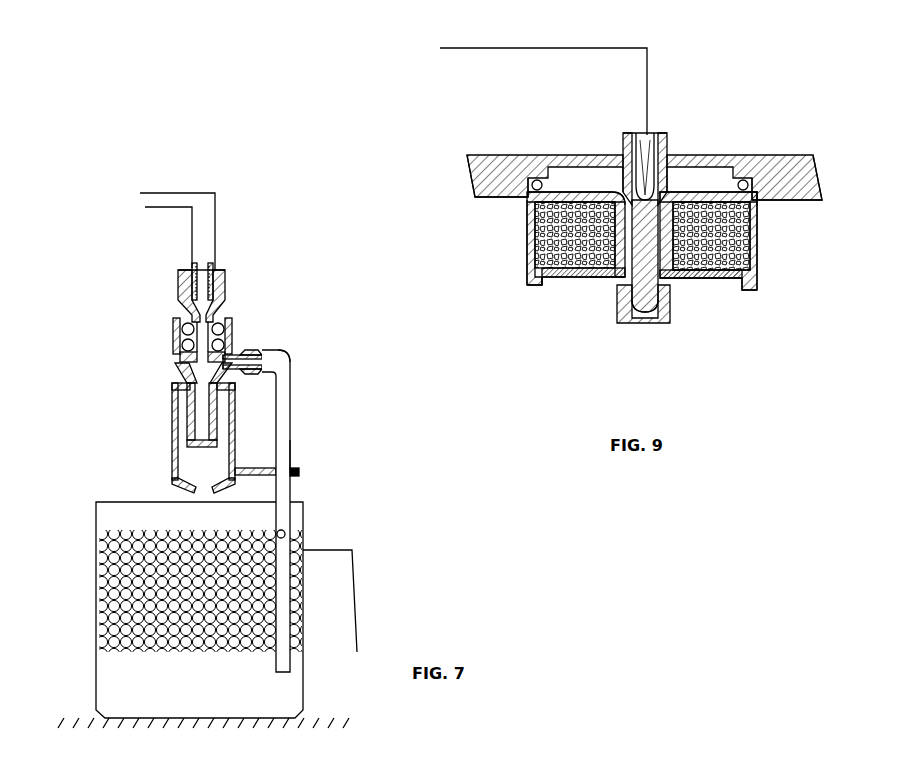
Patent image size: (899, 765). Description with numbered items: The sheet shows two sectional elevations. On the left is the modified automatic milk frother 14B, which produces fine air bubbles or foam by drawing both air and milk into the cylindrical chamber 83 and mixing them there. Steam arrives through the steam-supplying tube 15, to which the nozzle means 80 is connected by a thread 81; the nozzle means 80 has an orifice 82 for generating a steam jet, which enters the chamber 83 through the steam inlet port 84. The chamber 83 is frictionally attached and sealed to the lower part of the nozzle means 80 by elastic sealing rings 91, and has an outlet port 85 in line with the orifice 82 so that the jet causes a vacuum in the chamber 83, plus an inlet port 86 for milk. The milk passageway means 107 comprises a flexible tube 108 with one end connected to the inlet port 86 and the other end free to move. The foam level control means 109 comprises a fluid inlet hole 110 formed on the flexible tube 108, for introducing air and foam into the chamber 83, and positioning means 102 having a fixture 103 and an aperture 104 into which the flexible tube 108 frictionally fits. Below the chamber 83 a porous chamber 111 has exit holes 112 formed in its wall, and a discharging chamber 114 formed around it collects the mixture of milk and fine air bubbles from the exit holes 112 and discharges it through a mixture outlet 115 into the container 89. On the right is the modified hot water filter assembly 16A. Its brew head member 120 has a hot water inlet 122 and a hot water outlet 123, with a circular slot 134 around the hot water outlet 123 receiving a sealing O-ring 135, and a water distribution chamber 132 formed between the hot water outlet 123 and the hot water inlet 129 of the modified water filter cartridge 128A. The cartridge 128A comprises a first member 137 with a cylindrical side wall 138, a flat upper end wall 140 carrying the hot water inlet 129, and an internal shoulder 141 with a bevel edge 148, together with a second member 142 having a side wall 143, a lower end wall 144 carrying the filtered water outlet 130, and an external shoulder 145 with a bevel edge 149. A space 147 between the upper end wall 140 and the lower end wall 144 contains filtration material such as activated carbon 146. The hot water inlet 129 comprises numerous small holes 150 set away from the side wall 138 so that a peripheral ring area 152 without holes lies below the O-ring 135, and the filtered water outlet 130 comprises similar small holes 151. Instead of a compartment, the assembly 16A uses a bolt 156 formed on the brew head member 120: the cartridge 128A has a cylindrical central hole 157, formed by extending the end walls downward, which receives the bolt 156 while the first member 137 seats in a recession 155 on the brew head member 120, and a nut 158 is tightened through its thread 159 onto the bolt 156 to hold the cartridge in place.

In FIG. 7, the steam-supplying tube 15 is at (176, 193).
In FIG. 9, the steam-supplying tube 15 is at (535, 48).
In FIG. 7, the modified automatic milk frother 14B is at (241, 178).
In FIG. 7, the nozzle means 80 is at (178, 302).
In FIG. 7, the thread 81 is at (216, 268).
In FIG. 7, the orifice 82 is at (183, 368).
In FIG. 7, the cylindrical chamber 83 is at (181, 332).
In FIG. 7, the steam inlet port 84 is at (224, 374).
In FIG. 7, the outlet port 85 is at (201, 377).
In FIG. 7, the inlet port 86 is at (234, 350).
In FIG. 7, the elastic sealing rings 91 is at (231, 323).
In FIG. 7, the positioning means 102 is at (263, 460).
In FIG. 7, the fixture 103 is at (259, 478).
In FIG. 7, the aperture 104 is at (300, 474).
In FIG. 7, the milk passageway means 107 is at (303, 366).
In FIG. 7, the flexible tube 108 is at (291, 427).
In FIG. 7, the foam level control means 109 is at (302, 453).
In FIG. 7, the fluid inlet hole 110 is at (286, 534).
In FIG. 7, the porous chamber 111 is at (207, 401).
In FIG. 7, the exit holes 112 is at (188, 422).
In FIG. 7, the discharging chamber 114 is at (178, 470).
In FIG. 7, the mixture outlet 115 is at (204, 492).
In FIG. 7, the container 89 is at (200, 615).
In FIG. 9, the modified hot water filter assembly 16A is at (671, 46).
In FIG. 9, the brew head member 120 is at (802, 155).
In FIG. 9, the hot water inlet 122 is at (628, 132).
In FIG. 9, the hot water outlet 123 is at (620, 178).
In FIG. 9, the modified water filter cartridge 128A is at (766, 240).
In FIG. 9, the hot water inlet 129 is at (572, 183).
In FIG. 9, the filtered water outlet 130 is at (707, 290).
In FIG. 9, the water distribution chamber 132 is at (699, 182).
In FIG. 9, the circular slot 134 is at (532, 182).
In FIG. 9, the sealing O-ring 135 is at (533, 153).
In FIG. 9, the first member 137 is at (518, 212).
In FIG. 9, the side wall 138 is at (527, 223).
In FIG. 9, the upper end wall 140 is at (561, 193).
In FIG. 9, the internal shoulder 141 is at (530, 288).
In FIG. 9, the second member 142 is at (577, 282).
In FIG. 9, the side wall 143 is at (603, 278).
In FIG. 9, the lower end wall 144 is at (562, 280).
In FIG. 9, the external shoulder 145 is at (735, 283).
In FIG. 9, the activated carbon 146 is at (756, 258).
In FIG. 9, the space 147 is at (540, 252).
In FIG. 9, the bevel edge 148 is at (540, 285).
In FIG. 9, the bevel edge 149 is at (756, 277).
In FIG. 9, the holes 150 is at (710, 207).
In FIG. 9, the holes 151 is at (732, 280).
In FIG. 9, the peripheral ring area 152 is at (762, 183).
In FIG. 9, the recession 155 is at (758, 204).
In FIG. 9, the bolt 156 is at (650, 170).
In FIG. 9, the cylindrical central hole 157 is at (672, 193).
In FIG. 9, the nut 158 is at (627, 327).
In FIG. 9, the thread 159 is at (641, 314).